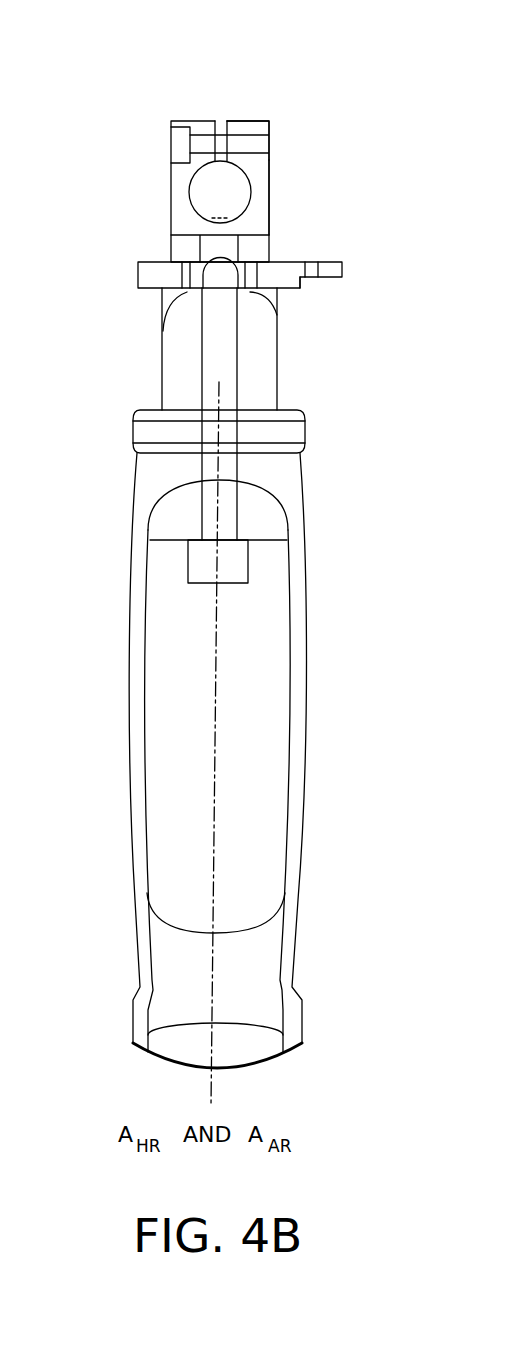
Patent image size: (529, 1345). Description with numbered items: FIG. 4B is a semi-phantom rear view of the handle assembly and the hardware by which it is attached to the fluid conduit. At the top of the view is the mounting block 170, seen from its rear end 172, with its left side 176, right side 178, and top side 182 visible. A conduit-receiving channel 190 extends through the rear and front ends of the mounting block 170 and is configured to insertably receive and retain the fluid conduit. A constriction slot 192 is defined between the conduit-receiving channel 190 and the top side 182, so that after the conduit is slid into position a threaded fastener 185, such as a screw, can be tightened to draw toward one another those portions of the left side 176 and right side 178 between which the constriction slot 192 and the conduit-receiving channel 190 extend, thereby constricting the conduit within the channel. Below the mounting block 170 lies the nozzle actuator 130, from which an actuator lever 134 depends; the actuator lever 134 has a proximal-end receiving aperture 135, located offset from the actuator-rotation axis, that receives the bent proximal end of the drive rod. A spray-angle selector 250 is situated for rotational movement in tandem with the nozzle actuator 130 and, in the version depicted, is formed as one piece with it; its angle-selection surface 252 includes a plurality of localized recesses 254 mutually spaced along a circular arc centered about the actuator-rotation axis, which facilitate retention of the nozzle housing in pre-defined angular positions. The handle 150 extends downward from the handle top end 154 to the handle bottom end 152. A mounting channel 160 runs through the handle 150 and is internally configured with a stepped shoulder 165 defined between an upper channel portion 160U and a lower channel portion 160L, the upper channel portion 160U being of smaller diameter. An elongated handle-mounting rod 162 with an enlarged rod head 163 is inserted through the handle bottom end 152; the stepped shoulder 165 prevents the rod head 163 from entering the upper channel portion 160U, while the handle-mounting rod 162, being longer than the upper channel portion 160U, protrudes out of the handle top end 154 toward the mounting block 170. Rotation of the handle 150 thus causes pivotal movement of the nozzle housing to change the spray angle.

The nozzle actuator 130 is at (140, 268).
The actuator lever 134 is at (343, 270).
The proximal-end receiving aperture 135 is at (318, 245).
The handle 150 is at (135, 723).
The handle bottom end 152 is at (248, 1067).
The handle top end 154 is at (277, 315).
The mounting channel 160 is at (233, 860).
The upper channel portion 160U is at (246, 466).
The lower channel portion 160L is at (188, 733).
The handle-mounting rod 162 is at (223, 372).
The rod head 163 is at (207, 568).
The stepped shoulder 165 is at (263, 542).
The mounting block 170 is at (192, 120).
The rear end 172 is at (170, 180).
The left side 176 is at (170, 213).
The right side 178 is at (269, 175).
The top side 182 is at (257, 120).
The threaded fastener 185 is at (170, 143).
The conduit-receiving channel 190 is at (229, 186).
The constriction slot 192 is at (220, 102).
The spray-angle selector 250 is at (165, 272).
The angle-selection surface 252 is at (165, 283).
The localized recesses 254 is at (163, 331).